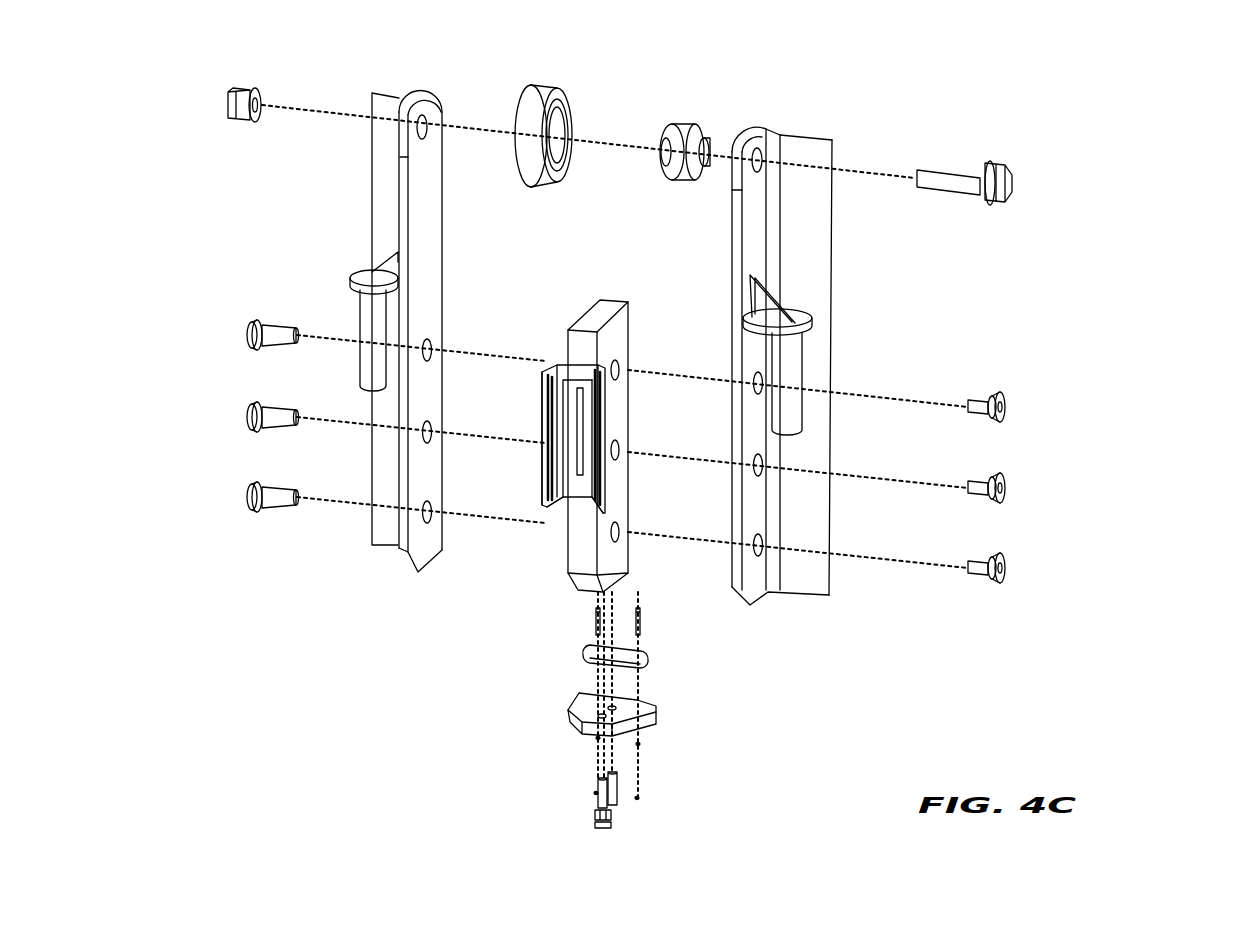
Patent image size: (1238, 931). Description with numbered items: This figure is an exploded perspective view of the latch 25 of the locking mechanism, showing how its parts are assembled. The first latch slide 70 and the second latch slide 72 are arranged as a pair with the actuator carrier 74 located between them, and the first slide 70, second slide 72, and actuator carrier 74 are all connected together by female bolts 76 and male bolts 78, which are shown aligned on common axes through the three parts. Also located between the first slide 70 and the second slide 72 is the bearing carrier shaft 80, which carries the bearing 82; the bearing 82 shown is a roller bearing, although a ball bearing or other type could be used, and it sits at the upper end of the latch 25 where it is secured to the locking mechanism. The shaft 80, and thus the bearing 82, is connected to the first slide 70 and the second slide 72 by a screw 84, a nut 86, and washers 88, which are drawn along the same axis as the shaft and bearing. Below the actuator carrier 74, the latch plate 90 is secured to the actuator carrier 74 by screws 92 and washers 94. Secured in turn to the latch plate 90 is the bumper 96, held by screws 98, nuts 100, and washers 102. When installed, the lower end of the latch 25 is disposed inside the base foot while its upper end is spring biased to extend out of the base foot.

The latch 25 is at (1082, 226).
The first latch slide 70 is at (748, 606).
The second latch slide 72 is at (412, 575).
The actuator carrier 74 is at (608, 300).
The female bolts 76 is at (250, 335).
The male bolts 78 is at (1005, 410).
The bearing carrier shaft 80 is at (685, 125).
The bearing 82 is at (553, 90).
The screw 84 is at (958, 175).
The nut 86 is at (240, 92).
The washers 88 is at (262, 100).
The latch plate 90 is at (570, 710).
The screws 92 is at (598, 806).
The washers 94 is at (601, 820).
The bumper 96 is at (585, 656).
The screws 98 is at (595, 627).
The nuts 100 is at (596, 793).
The washers 102 is at (596, 740).